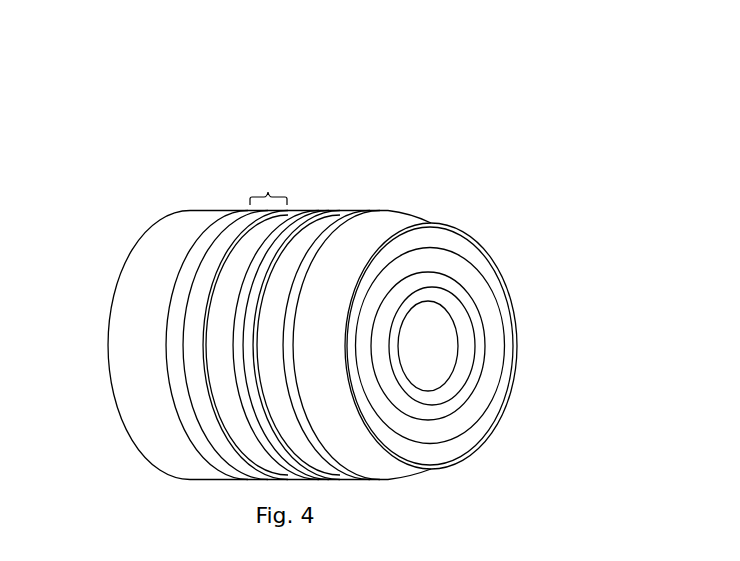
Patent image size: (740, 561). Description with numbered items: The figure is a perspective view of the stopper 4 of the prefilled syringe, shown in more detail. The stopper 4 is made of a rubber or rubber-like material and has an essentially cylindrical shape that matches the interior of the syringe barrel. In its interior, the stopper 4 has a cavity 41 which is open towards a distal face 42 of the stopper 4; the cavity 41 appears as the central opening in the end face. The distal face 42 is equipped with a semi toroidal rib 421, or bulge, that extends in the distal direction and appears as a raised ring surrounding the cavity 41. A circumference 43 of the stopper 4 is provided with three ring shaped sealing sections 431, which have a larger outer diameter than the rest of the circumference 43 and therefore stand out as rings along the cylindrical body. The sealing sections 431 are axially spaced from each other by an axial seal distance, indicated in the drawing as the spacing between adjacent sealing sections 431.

The stopper 4 is at (365, 280).
The cavity 41 is at (436, 328).
The distal face 42 is at (445, 237).
The semi toroidal rib 421 is at (478, 401).
The circumference 43 is at (203, 210).
The ring shaped sealing sections 431 is at (322, 232).